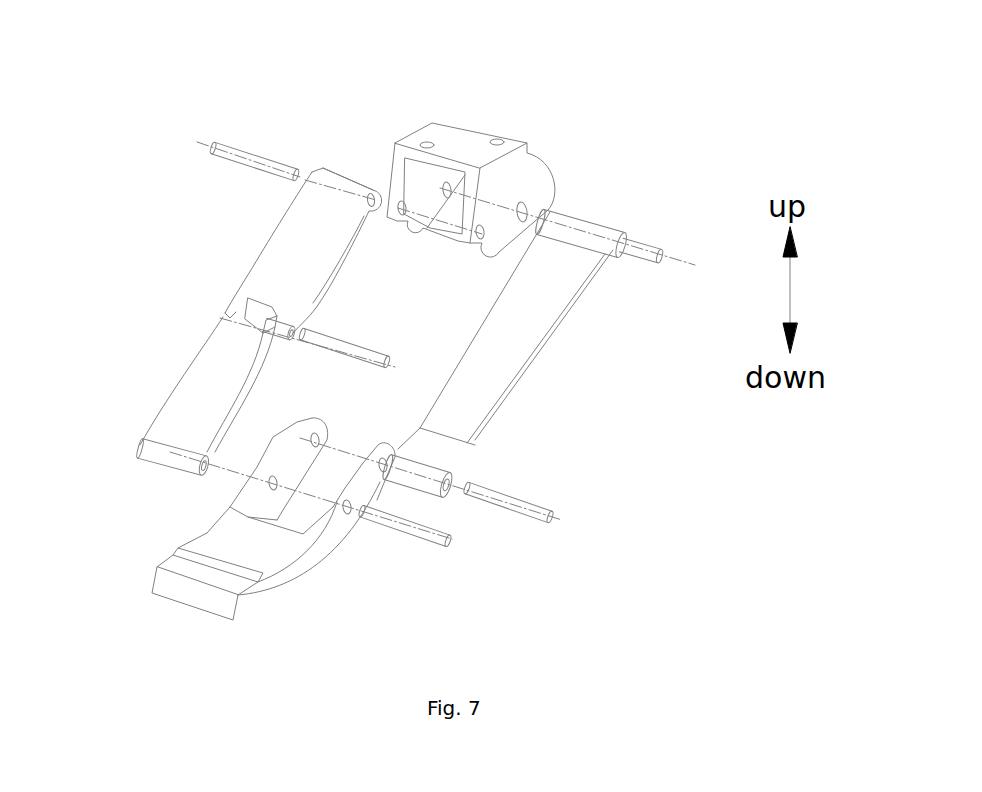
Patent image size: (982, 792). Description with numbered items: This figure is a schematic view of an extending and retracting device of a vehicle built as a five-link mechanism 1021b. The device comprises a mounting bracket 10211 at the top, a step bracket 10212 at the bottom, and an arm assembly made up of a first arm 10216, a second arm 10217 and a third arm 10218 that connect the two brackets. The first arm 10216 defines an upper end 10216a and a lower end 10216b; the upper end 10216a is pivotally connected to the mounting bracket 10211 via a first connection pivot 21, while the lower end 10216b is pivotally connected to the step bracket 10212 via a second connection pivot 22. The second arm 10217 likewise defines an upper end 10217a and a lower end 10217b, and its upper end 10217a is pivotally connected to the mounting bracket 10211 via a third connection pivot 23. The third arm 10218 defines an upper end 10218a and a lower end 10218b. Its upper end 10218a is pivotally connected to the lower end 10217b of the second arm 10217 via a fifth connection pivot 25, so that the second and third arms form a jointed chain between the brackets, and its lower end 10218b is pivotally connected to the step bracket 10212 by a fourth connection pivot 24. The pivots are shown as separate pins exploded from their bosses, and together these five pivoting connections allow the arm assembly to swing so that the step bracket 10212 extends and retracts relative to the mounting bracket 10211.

The five-link mechanism 1021b is at (652, 128).
The mounting bracket 10211 is at (445, 123).
The step bracket 10212 is at (270, 597).
The first arm 10216 is at (526, 352).
The upper end of the first arm 10216a is at (593, 215).
The lower end of the first arm 10216b is at (447, 478).
The second arm 10217 is at (317, 170).
The upper end of the second arm 10217a is at (338, 178).
The lower end of the second arm 10217b is at (228, 312).
The third arm 10218 is at (190, 385).
The upper end of the third arm 10218a is at (245, 318).
The lower end of the third arm 10218b is at (180, 460).
The first connection pivot 21 is at (652, 248).
The second connection pivot 22 is at (510, 507).
The third connection pivot 23 is at (256, 160).
The fourth connection pivot 24 is at (403, 527).
The fifth connection pivot 25 is at (330, 338).